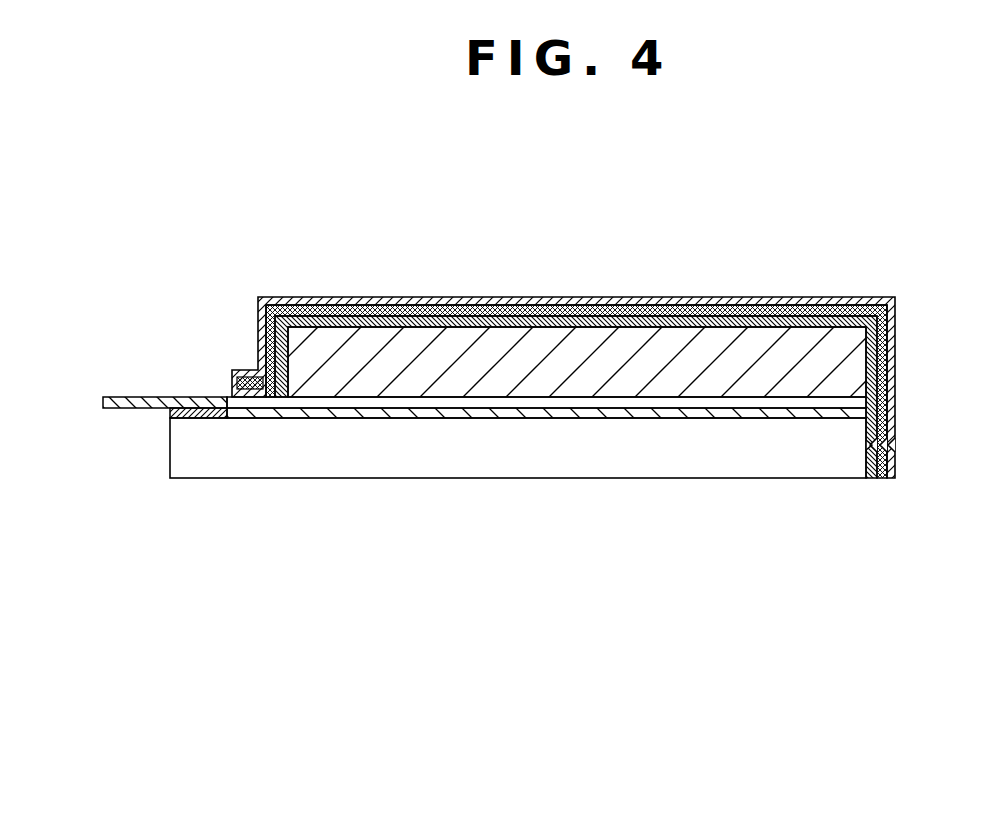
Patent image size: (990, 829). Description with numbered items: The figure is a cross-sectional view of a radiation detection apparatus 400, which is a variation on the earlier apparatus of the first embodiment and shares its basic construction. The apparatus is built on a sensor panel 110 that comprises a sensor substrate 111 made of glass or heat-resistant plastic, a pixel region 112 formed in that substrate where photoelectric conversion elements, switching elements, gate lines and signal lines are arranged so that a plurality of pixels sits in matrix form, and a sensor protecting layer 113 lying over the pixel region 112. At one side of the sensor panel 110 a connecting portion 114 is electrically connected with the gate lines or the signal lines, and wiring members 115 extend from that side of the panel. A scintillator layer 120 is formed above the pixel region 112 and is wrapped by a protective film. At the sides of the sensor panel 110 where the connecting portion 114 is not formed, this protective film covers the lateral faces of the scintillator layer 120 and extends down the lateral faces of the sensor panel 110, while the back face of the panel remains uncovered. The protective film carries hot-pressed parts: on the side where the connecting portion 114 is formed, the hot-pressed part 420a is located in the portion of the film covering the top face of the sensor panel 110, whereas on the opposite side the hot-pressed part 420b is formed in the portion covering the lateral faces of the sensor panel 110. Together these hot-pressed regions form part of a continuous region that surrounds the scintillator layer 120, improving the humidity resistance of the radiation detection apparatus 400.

The radiation detection apparatus 400 is at (822, 242).
The hot-pressed part 420a is at (240, 352).
The hot-pressed part 420b is at (905, 425).
The scintillator layer 120 is at (380, 340).
The sensor panel 110 is at (443, 424).
The sensor substrate 111 is at (388, 445).
The pixel region 112 is at (510, 414).
The sensor protecting layer 113 is at (600, 402).
The connecting portion 114 is at (196, 420).
The wiring members 115 is at (140, 398).